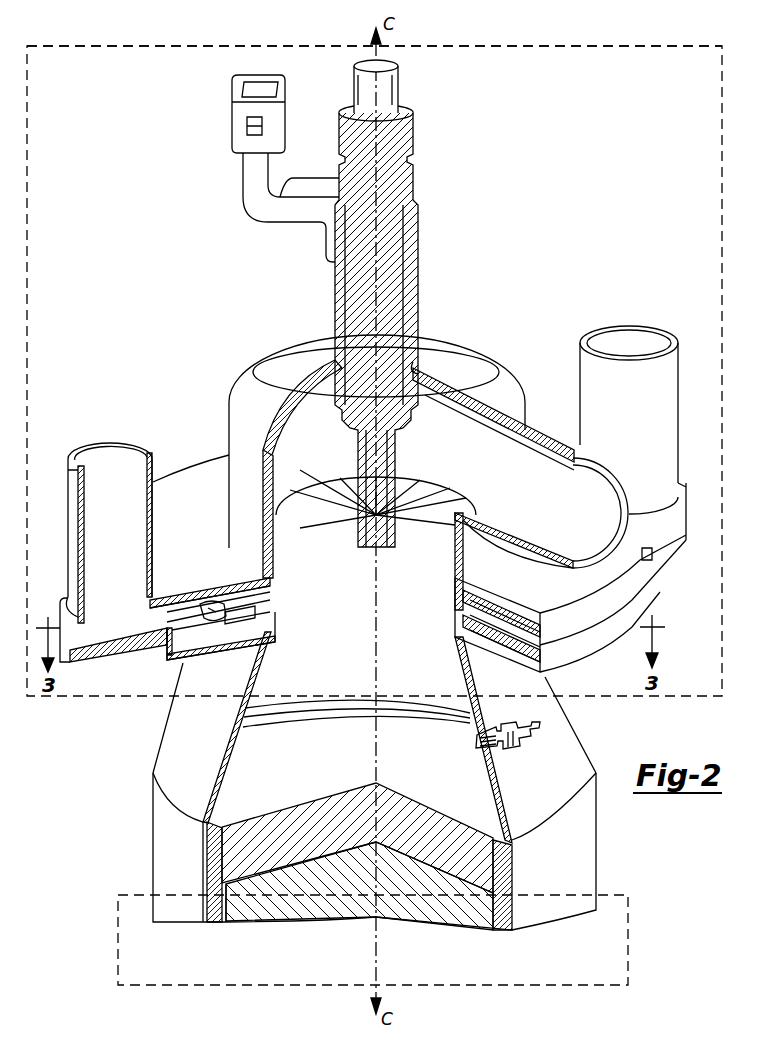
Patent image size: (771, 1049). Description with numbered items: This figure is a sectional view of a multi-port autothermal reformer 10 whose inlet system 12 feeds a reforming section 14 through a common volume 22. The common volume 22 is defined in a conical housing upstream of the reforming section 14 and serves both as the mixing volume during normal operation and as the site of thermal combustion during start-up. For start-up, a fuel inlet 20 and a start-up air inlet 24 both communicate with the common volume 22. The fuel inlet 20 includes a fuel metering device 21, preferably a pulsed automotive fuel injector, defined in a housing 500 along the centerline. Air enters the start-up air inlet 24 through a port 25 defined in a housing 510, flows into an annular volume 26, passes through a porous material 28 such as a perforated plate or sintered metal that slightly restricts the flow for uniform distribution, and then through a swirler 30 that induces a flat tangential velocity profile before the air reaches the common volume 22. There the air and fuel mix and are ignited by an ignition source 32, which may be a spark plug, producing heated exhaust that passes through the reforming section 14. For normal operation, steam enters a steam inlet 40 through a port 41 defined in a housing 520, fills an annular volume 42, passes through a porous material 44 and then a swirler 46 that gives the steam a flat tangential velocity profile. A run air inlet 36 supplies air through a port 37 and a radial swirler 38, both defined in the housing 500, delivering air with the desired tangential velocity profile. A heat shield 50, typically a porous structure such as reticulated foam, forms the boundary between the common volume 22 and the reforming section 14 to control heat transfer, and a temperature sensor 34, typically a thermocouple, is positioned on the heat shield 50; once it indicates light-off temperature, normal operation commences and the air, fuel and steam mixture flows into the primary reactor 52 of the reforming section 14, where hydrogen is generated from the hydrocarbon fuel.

The multi-port primary reforming reactor 10 is at (523, 38).
The inlet system 12 is at (706, 123).
The reforming section 14 is at (621, 906).
The fuel inlet 20 is at (389, 66).
The fuel metering device 21 is at (380, 98).
The common volume 22 is at (366, 670).
The start-up air inlet 24 is at (112, 458).
The port 25 is at (90, 485).
The annular volume 26 is at (105, 632).
The porous material 28 is at (205, 615).
The swirler 30 is at (265, 598).
The ignition source 32 is at (545, 732).
The temperature sensor 34 is at (376, 870).
The run air inlet 36 is at (579, 495).
The port 37 is at (505, 410).
The swirler 38 is at (452, 466).
The steam inlet 40 is at (634, 334).
The port 41 is at (585, 368).
The annular volume 42 is at (178, 663).
The porous material 44 is at (222, 648).
The swirler 46 is at (245, 626).
The heat shield 50 is at (505, 836).
The primary reactor 52 is at (462, 908).
The housing 500 is at (283, 360).
The housing 510 is at (205, 475).
The housing 520 is at (660, 560).